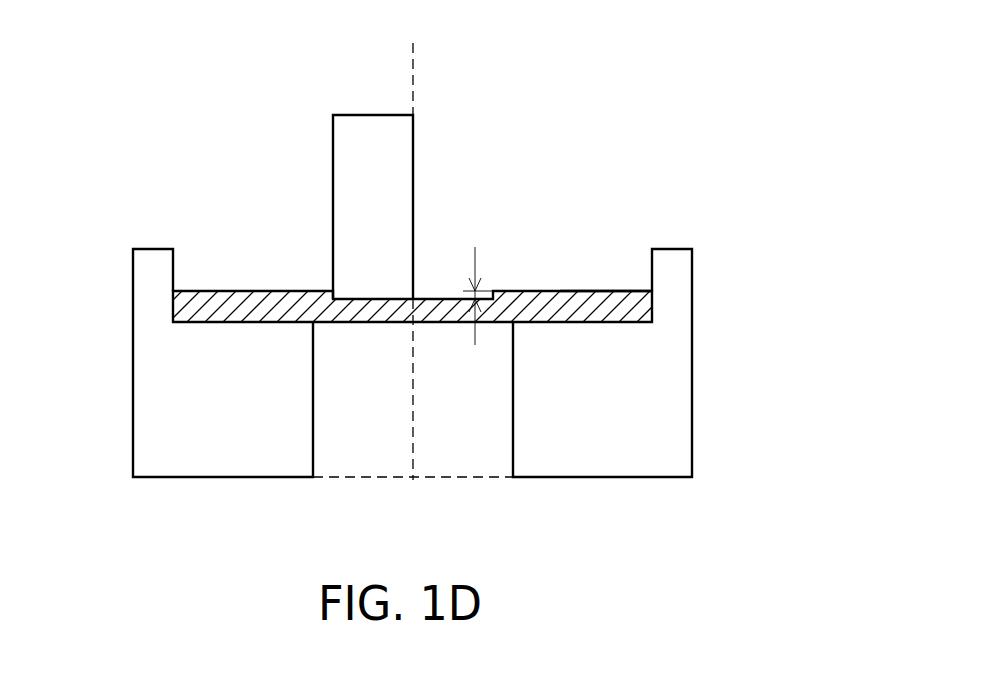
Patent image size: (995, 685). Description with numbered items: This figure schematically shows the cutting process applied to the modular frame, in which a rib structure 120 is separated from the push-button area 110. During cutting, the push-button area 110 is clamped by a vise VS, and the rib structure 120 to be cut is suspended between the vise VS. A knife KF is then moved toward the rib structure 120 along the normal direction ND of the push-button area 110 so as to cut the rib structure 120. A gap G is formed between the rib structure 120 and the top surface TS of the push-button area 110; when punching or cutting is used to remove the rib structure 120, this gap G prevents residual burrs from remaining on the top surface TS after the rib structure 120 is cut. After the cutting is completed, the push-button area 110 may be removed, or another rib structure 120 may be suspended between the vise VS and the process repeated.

The vise VS is at (158, 413).
The push-button area 110 is at (630, 305).
The top surface TS is at (597, 290).
The gap G is at (497, 293).
The knife KF is at (343, 140).
The normal direction ND is at (414, 245).
The rib structure 120 is at (372, 305).